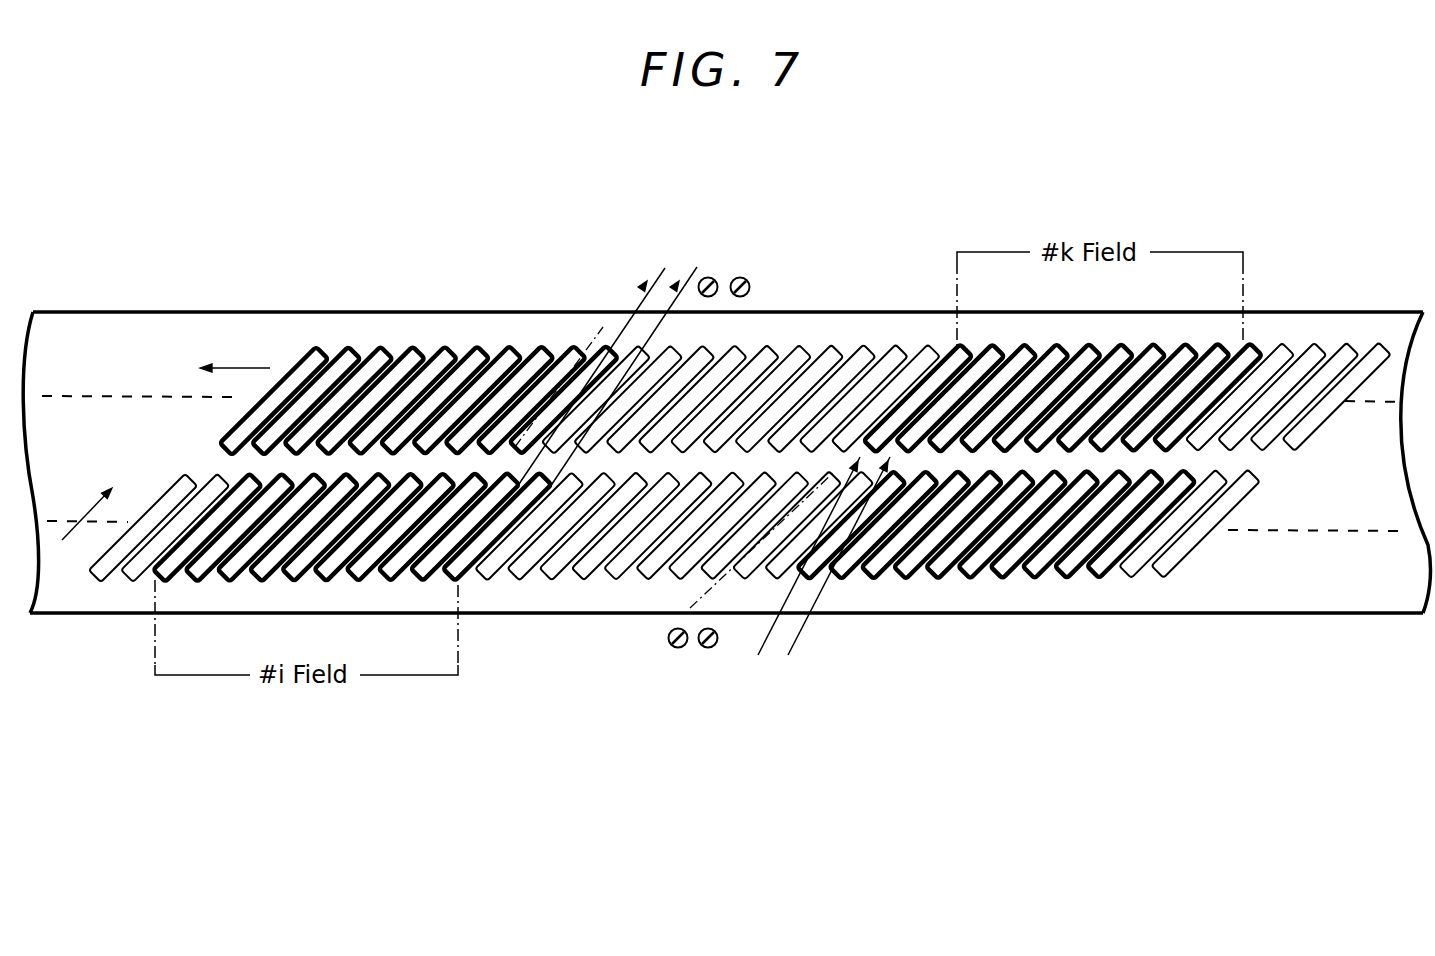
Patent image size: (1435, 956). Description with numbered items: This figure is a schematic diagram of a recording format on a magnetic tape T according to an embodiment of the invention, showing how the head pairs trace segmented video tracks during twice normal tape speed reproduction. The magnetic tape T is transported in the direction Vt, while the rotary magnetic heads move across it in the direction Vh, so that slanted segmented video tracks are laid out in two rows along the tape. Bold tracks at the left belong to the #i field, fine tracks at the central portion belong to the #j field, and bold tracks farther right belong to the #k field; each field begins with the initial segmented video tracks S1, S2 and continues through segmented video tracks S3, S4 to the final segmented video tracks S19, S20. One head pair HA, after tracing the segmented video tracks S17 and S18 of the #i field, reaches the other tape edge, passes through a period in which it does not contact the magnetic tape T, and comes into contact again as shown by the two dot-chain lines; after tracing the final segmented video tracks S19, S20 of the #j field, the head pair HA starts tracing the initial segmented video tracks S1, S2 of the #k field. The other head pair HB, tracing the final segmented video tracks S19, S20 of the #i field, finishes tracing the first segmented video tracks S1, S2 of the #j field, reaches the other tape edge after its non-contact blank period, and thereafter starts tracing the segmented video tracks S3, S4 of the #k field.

The magnetic tape T is at (152, 312).
The segmented video track S1 is at (308, 356).
The segmented video track S2 is at (343, 356).
The segmented video track S3 is at (177, 583).
The segmented video track S4 is at (210, 583).
The segmented video track S17 is at (570, 353).
The segmented video track S18 is at (603, 352).
The segmented video track S19 is at (417, 583).
The segmented video track S20 is at (455, 585).
The head pair HA is at (699, 662).
The head pair HB is at (720, 268).
The transportation direction of the magnetic tape Vt is at (224, 367).
The moving direction of the magnetic head Vh is at (101, 501).